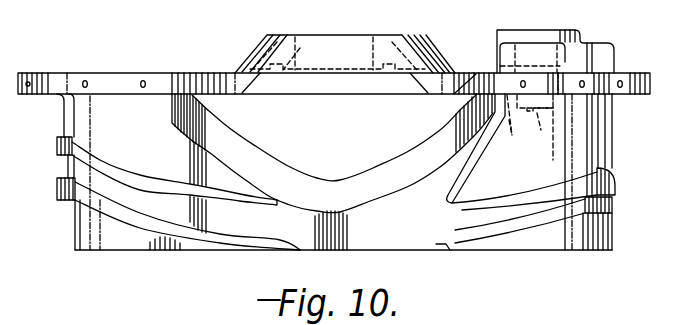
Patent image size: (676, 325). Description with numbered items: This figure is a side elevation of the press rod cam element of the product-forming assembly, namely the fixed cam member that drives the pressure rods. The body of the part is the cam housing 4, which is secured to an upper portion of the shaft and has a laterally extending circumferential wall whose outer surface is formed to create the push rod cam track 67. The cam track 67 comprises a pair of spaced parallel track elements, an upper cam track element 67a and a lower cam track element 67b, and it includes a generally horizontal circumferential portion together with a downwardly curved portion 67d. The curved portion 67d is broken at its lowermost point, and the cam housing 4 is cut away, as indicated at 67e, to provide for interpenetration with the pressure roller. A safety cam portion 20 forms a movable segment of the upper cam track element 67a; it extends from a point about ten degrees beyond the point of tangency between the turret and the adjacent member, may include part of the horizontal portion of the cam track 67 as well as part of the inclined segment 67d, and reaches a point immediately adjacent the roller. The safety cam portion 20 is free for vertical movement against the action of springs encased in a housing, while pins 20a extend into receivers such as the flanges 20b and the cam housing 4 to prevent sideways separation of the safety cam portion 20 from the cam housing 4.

The cam housing 4 is at (60, 73).
The cut-away portion 67e is at (218, 78).
The safety cam portion 20 is at (612, 121).
The pins 20a is at (541, 131).
The flanges 20b is at (509, 140).
The cam track 67 is at (64, 166).
The upper cam track element 67a is at (62, 137).
The lower cam track element 67b is at (62, 197).
The downwardly curved portion 67d is at (139, 195).